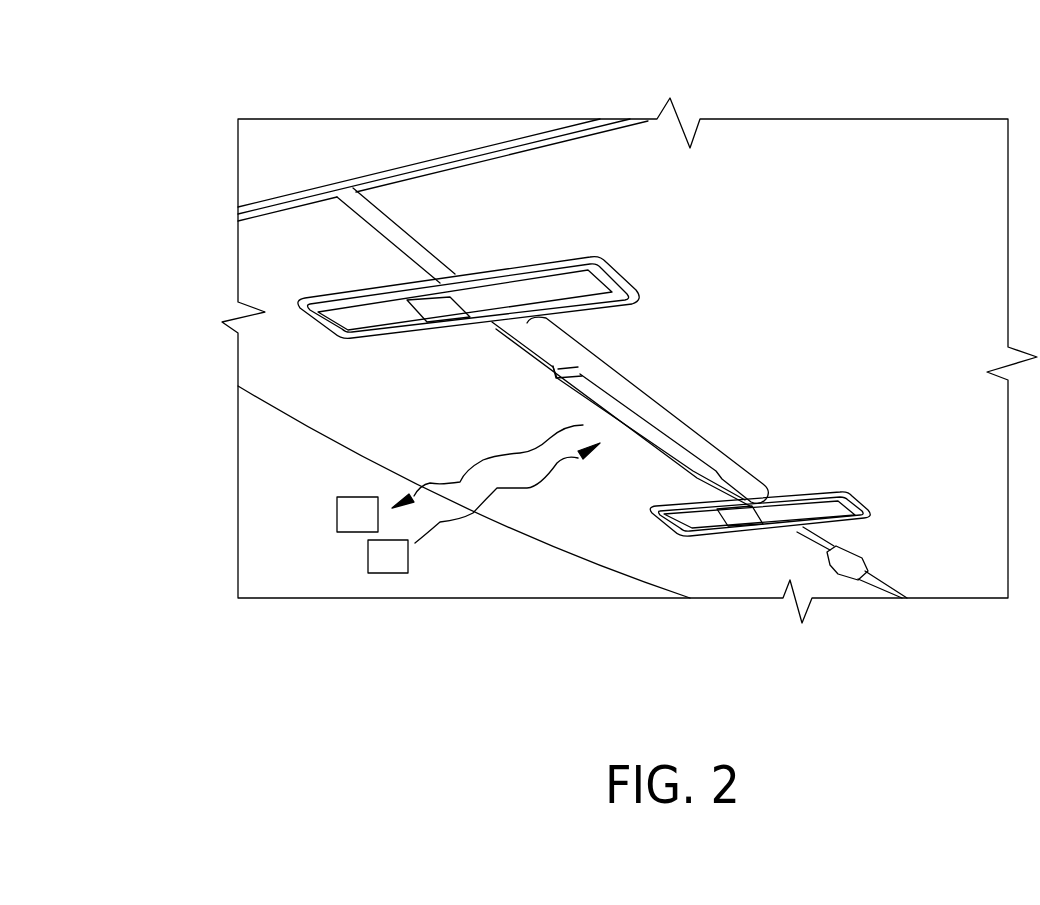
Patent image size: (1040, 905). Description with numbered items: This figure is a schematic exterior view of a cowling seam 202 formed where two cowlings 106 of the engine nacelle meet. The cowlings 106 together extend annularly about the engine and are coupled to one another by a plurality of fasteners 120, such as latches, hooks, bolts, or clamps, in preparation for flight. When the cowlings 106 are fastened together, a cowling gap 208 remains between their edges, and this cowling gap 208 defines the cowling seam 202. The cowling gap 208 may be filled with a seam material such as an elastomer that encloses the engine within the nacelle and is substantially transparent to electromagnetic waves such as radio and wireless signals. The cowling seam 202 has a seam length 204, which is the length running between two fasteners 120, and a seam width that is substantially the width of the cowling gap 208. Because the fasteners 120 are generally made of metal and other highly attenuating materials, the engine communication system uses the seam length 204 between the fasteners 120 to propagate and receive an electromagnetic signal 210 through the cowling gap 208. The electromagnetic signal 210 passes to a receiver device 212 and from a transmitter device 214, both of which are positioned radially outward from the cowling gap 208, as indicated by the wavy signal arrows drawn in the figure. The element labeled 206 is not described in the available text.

The cowling 106 is at (908, 185).
The fastener 120 is at (527, 297).
The cowling seam 202 is at (692, 437).
The seam length 204 is at (672, 406).
The coupling 206 is at (572, 380).
The cowling gap 208 is at (387, 218).
The electromagnetic signal 210 is at (527, 488).
The receiver device 212 is at (348, 497).
The transmitter device 214 is at (408, 553).